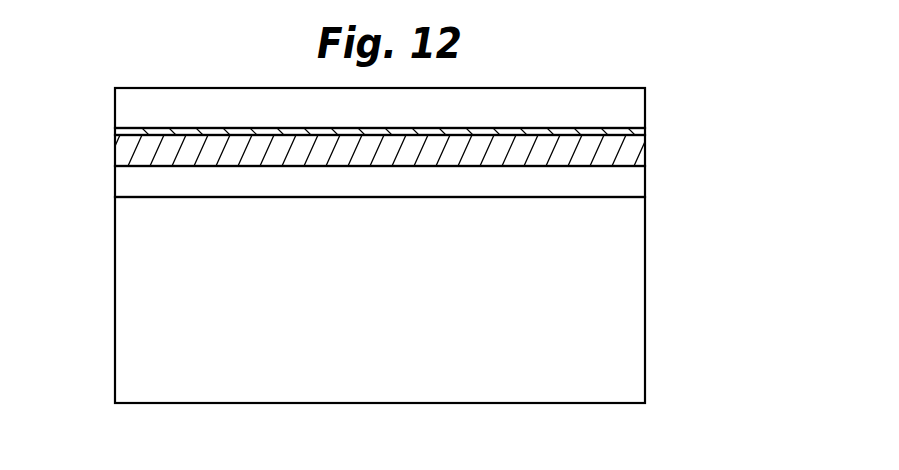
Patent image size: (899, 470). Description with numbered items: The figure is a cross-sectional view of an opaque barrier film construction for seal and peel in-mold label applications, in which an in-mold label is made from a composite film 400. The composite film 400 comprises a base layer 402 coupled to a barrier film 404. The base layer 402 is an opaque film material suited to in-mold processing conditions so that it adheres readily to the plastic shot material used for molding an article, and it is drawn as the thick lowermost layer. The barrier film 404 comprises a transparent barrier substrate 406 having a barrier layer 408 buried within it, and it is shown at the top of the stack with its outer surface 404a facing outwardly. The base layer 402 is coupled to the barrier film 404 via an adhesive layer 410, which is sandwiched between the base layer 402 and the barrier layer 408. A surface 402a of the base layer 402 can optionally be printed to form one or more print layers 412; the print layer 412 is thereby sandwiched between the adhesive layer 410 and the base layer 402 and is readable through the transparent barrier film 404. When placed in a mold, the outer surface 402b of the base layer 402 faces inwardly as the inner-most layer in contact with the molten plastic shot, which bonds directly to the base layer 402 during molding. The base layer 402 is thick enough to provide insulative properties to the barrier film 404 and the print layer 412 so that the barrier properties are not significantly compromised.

The composite film 400 is at (381, 236).
The base layer 402 is at (127, 293).
The surface of base layer 402a is at (145, 197).
The outer surface of base layer 402b is at (168, 405).
The barrier film 404 is at (395, 106).
The top surface of overlay 404a is at (497, 87).
The transparent barrier substrate 406 is at (648, 107).
The barrier layer 408 is at (647, 130).
The adhesive layer 410 is at (128, 151).
The print layer 412 is at (635, 177).